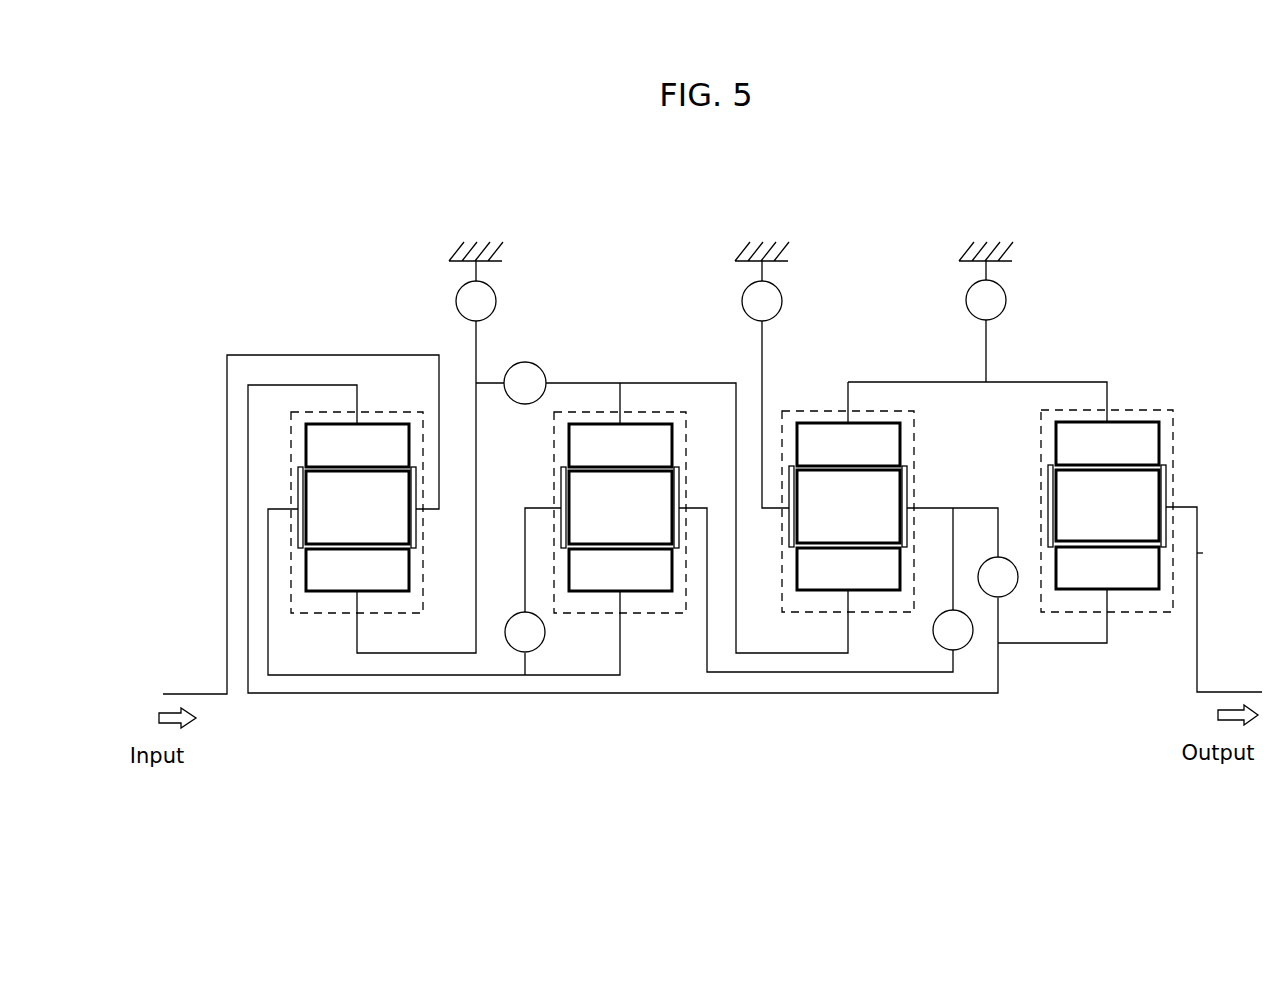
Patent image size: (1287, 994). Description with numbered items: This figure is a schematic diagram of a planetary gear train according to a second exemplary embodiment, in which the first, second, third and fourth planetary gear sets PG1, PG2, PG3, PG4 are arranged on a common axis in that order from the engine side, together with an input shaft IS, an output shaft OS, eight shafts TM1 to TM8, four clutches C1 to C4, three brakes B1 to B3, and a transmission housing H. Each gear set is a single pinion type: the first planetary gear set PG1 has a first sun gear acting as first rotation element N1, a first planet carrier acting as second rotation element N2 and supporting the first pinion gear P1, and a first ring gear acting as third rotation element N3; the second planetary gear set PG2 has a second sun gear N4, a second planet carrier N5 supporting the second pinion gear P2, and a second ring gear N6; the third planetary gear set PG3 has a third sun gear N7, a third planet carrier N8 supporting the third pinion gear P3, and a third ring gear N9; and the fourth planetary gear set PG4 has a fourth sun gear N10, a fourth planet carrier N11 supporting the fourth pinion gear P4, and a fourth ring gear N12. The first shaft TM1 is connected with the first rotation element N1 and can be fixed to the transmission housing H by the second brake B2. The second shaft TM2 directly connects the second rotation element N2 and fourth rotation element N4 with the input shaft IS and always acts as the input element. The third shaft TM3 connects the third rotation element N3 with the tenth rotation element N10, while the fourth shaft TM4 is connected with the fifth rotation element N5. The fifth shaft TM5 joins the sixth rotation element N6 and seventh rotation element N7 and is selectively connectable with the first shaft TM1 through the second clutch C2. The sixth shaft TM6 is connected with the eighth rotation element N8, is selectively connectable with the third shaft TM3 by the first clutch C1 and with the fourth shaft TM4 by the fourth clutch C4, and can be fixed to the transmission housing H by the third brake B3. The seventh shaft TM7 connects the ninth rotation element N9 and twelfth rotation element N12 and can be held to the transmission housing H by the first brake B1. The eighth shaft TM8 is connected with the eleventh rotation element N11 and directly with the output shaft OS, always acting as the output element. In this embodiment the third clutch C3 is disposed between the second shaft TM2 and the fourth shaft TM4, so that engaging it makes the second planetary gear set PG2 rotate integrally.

The first planetary gear set PG1 is at (333, 614).
The second planetary gear set PG2 is at (585, 614).
The third planetary gear set PG3 is at (880, 613).
The fourth planetary gear set PG4 is at (1127, 614).
The first rotation element N1 is at (357, 570).
The second rotation element N2 is at (298, 537).
The third rotation element N3 is at (357, 445).
The fourth rotation element N4 is at (620, 570).
The fifth rotation element N5 is at (561, 478).
The sixth rotation element N6 is at (620, 445).
The seventh rotation element N7 is at (848, 569).
The eighth rotation element N8 is at (906, 467).
The ninth rotation element N9 is at (848, 444).
The tenth rotation element N10 is at (1107, 568).
The eleventh rotation element N11 is at (1166, 478).
The twelfth rotation element N12 is at (1107, 443).
The first pinion gear P1 is at (361, 507).
The second pinion gear P2 is at (624, 507).
The third pinion gear P3 is at (844, 506).
The fourth pinion gear P4 is at (1103, 506).
The first shaft TM1 is at (413, 654).
The second shaft TM2 is at (462, 676).
The third shaft TM3 is at (530, 694).
The fourth shaft TM4 is at (752, 694).
The fifth shaft TM5 is at (664, 383).
The sixth shaft TM6 is at (763, 342).
The seventh shaft TM7 is at (1059, 382).
The eighth shaft TM8 is at (1197, 552).
The first brake B1 is at (986, 281).
The second brake B2 is at (476, 281).
The third brake B3 is at (762, 281).
The first clutch C1 is at (998, 577).
The second clutch C2 is at (525, 383).
The third clutch C3 is at (533, 580).
The fourth clutch C4 is at (826, 590).
The transmission housing H is at (476, 250).
The input shaft IS is at (217, 695).
The output shaft OS is at (1237, 690).